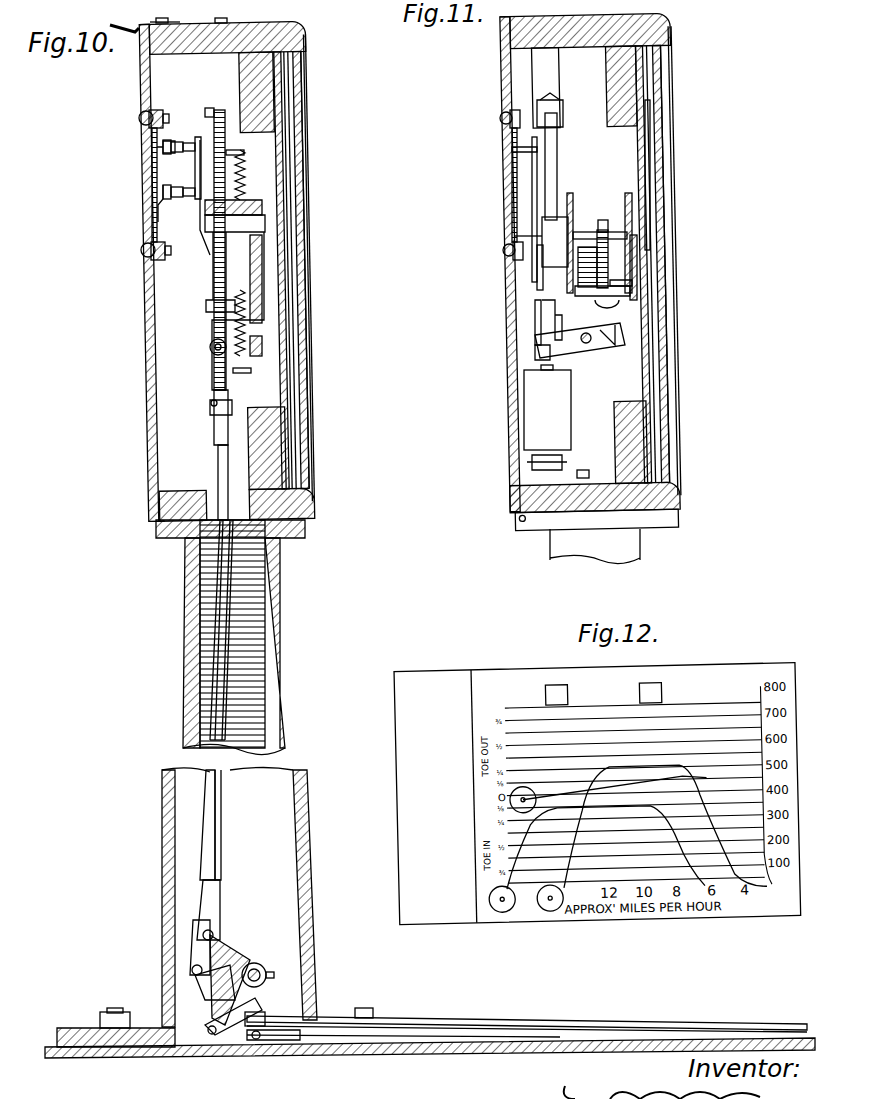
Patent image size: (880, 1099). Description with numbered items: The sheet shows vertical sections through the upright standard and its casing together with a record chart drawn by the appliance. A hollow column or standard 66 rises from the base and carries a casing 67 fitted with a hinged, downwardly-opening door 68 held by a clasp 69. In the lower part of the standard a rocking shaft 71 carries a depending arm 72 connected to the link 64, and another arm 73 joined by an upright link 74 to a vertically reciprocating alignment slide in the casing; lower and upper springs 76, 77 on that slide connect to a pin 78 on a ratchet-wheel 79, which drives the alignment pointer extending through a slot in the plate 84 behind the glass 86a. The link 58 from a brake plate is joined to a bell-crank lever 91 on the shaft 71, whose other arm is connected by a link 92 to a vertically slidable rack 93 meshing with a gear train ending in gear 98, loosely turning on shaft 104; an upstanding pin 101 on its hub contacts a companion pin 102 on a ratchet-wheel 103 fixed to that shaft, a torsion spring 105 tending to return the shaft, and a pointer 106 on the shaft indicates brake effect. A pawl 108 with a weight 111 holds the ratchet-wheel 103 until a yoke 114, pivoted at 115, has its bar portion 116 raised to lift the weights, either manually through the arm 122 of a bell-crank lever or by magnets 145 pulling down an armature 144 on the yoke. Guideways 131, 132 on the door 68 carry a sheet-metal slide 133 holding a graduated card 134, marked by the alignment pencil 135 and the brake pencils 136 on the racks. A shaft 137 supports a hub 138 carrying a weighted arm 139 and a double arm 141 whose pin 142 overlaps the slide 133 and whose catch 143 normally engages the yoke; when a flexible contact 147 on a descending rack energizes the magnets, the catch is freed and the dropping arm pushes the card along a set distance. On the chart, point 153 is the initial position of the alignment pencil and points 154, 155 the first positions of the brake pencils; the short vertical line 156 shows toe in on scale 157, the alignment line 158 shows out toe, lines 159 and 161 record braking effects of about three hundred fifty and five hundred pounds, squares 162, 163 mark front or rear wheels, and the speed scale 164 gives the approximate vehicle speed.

In FIG. 10, the link 58 is at (278, 1020).
In FIG. 10, the link 64 is at (352, 1050).
In FIG. 10, the hollow column or standard 66 is at (284, 690).
In FIG. 11, the hollow column or standard 66 is at (636, 548).
In FIG. 10, the casing 67 is at (236, 28).
In FIG. 11, the casing 67 is at (590, 6).
In FIG. 10, the hinged door 68 is at (148, 316).
In FIG. 11, the hinged door 68 is at (509, 372).
In FIG. 10, the holding clasp 69 is at (126, 24).
In FIG. 10, the shaft 71 is at (258, 968).
In FIG. 10, the depending arm 72 is at (245, 1032).
In FIG. 10, the arm 73 is at (213, 992).
In FIG. 10, the upright link 74 is at (205, 795).
In FIG. 10, the lower spring 76 is at (246, 366).
In FIG. 10, the upper spring 77 is at (243, 172).
In FIG. 10, the pin 78 is at (214, 290).
In FIG. 10, the ratchet-wheel 79 is at (258, 257).
In FIG. 11, the plate 84 is at (640, 312).
In FIG. 10, the glass or window 86a is at (301, 268).
In FIG. 11, the glass or window 86a is at (658, 270).
In FIG. 10, the bell-crank lever 91 is at (218, 950).
In FIG. 10, the link 92 is at (222, 833).
In FIG. 10, the rack 93 is at (210, 250).
In FIG. 11, the gear 98 is at (578, 290).
In FIG. 11, the upstanding pin 101 is at (606, 220).
In FIG. 11, the companion pin 102 is at (566, 240).
In FIG. 11, the ratchet-wheel 103 is at (612, 228).
In FIG. 11, the shaft 104 is at (610, 262).
In FIG. 11, the torsion spring 105 is at (632, 248).
In FIG. 11, the pointer 106 is at (650, 168).
In FIG. 11, the pawl 108 is at (606, 310).
In FIG. 11, the weight 111 is at (644, 290).
In FIG. 11, the yoke 114 is at (612, 348).
In FIG. 10, the pivot 115 is at (211, 349).
In FIG. 11, the pivot 115 is at (585, 345).
In FIG. 10, the bar portion 116 is at (263, 345).
In FIG. 11, the bar portion 116 is at (626, 340).
In FIG. 11, the arm 122 is at (550, 330).
In FIG. 10, the guideway 131 is at (150, 114).
In FIG. 11, the guideway 131 is at (512, 105).
In FIG. 10, the guideway 132 is at (152, 262).
In FIG. 11, the guideway 132 is at (514, 256).
In FIG. 10, the sheet-metal slide 133 is at (151, 178).
In FIG. 11, the sheet-metal slide 133 is at (515, 200).
In FIG. 10, the graduated card 134 is at (167, 188).
In FIG. 11, the graduated card 134 is at (540, 190).
In FIG. 12, the graduated card 134 is at (472, 918).
In FIG. 10, the marking pencil 135 is at (162, 200).
In FIG. 10, the pencil 136 is at (168, 143).
In FIG. 11, the shaft 137 is at (584, 232).
In FIG. 11, the hub 138 is at (535, 250).
In FIG. 11, the weighted arm 139 is at (556, 178).
In FIG. 11, the double arm 141 is at (536, 286).
In FIG. 11, the outstanding pin 142 is at (520, 183).
In FIG. 11, the catch 143 is at (538, 340).
In FIG. 11, the armature 144 is at (538, 352).
In FIG. 11, the magnet 145 is at (542, 412).
In FIG. 10, the flexible electric-contact 147 is at (214, 108).
In FIG. 12, the point 153 is at (528, 790).
In FIG. 12, the point 154 is at (500, 903).
In FIG. 12, the point 155 is at (549, 903).
In FIG. 12, the vertical line 156 is at (533, 801).
In FIG. 12, the scale 157 is at (485, 794).
In FIG. 12, the alignment line 158 is at (630, 788).
In FIG. 12, the line 159 is at (548, 815).
In FIG. 12, the line 161 is at (615, 760).
In FIG. 12, the square 162 is at (570, 660).
In FIG. 12, the square 163 is at (662, 685).
In FIG. 12, the speed scale 164 is at (611, 895).